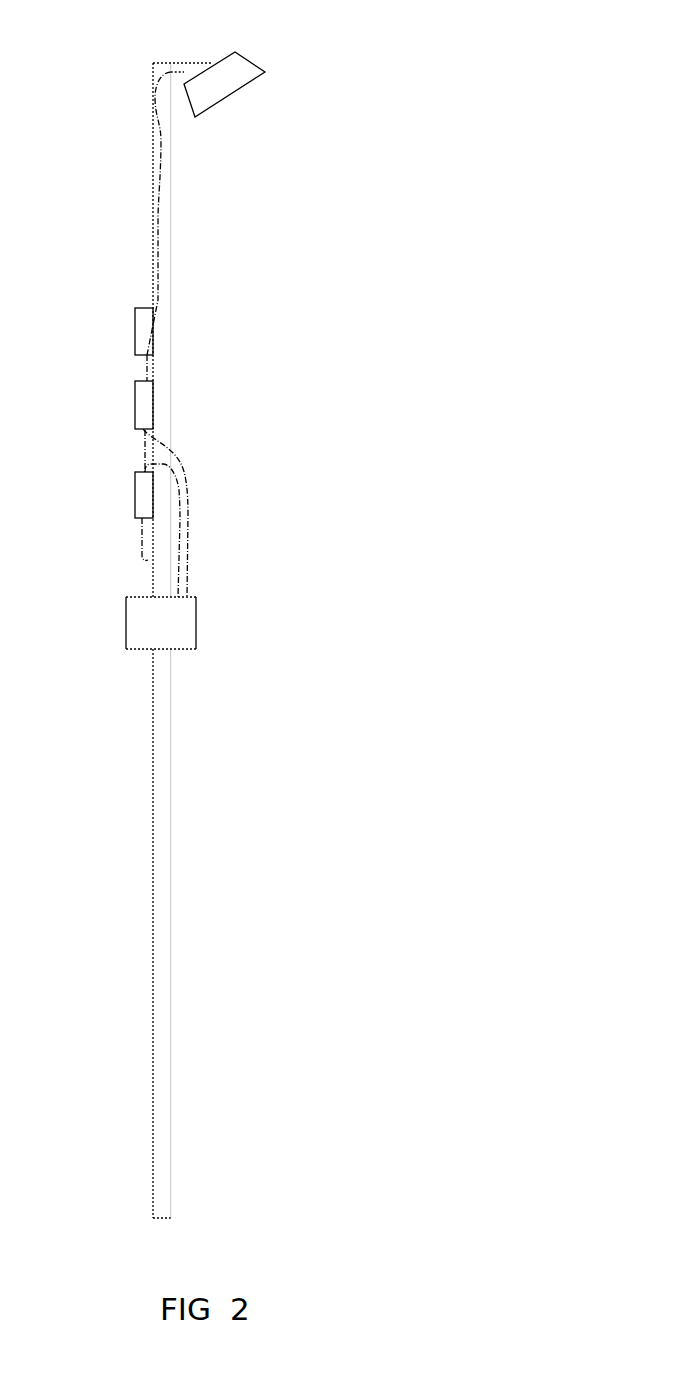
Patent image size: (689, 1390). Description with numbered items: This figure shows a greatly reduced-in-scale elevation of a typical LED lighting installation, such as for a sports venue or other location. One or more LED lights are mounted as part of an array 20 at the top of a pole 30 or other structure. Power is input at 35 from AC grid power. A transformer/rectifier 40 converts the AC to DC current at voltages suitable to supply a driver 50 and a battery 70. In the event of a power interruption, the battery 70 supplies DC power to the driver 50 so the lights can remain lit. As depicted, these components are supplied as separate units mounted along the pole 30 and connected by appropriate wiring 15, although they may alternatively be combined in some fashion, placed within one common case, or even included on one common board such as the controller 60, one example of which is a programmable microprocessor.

The wiring 15 is at (160, 142).
The array 20 is at (245, 87).
The pole 30 is at (171, 187).
The power input 35 is at (147, 560).
The transformer/rectifier 40 is at (135, 488).
The driver 50 is at (135, 408).
The controller 60 is at (135, 335).
The battery 70 is at (197, 620).